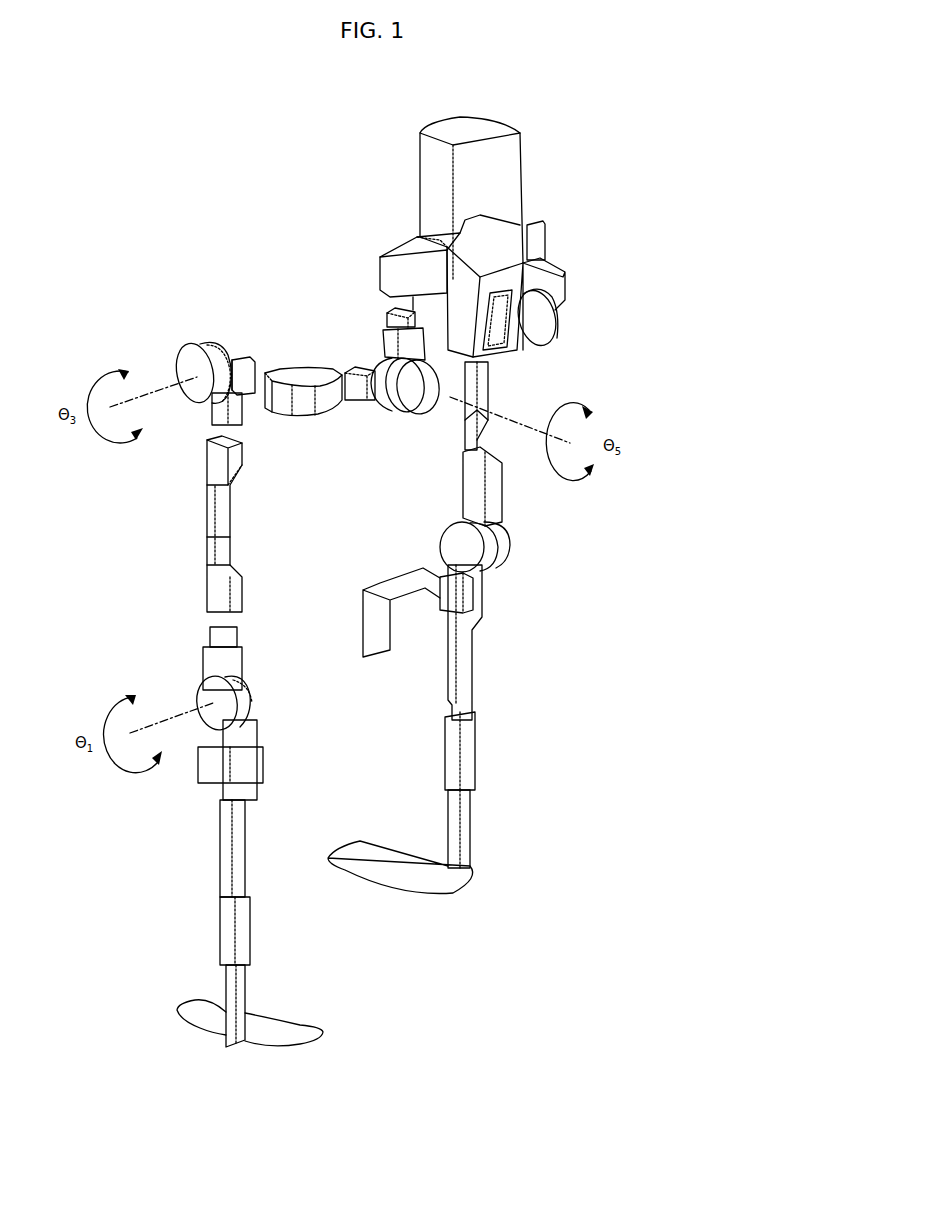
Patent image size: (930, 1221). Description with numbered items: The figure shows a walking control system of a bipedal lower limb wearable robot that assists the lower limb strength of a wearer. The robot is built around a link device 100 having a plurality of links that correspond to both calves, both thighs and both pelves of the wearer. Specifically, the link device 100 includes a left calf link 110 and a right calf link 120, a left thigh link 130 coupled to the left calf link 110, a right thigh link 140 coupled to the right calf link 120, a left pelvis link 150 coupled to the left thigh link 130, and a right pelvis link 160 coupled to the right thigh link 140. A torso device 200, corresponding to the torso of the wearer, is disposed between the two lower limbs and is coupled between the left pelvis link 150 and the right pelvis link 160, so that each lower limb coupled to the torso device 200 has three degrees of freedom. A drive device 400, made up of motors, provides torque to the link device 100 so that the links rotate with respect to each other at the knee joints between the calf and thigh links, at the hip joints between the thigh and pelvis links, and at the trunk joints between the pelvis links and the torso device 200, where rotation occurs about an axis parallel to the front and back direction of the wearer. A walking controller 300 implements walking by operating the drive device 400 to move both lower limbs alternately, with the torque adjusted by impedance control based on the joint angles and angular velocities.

The link device 100 is at (278, 312).
The left calf link 110 is at (220, 862).
The right calf link 120 is at (463, 688).
The left thigh link 130 is at (207, 547).
The right thigh link 140 is at (497, 505).
The left pelvis link 150 is at (318, 372).
The right pelvis link 160 is at (565, 298).
The torso device 200 is at (510, 172).
The walking controller 300 is at (505, 320).
The drive device 400 is at (177, 343).